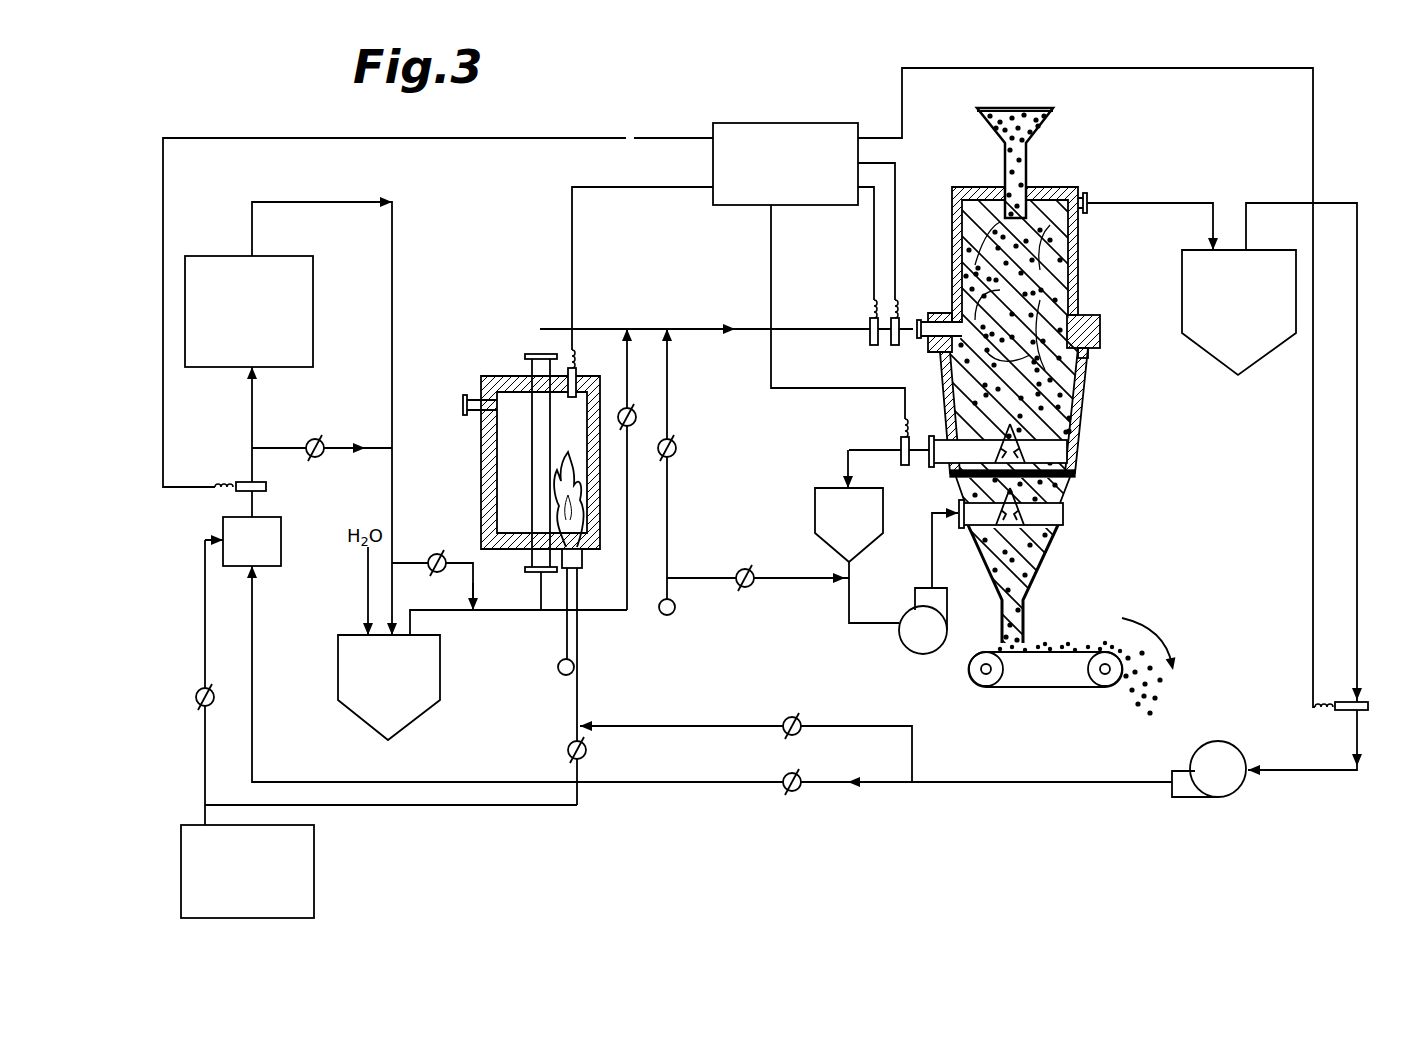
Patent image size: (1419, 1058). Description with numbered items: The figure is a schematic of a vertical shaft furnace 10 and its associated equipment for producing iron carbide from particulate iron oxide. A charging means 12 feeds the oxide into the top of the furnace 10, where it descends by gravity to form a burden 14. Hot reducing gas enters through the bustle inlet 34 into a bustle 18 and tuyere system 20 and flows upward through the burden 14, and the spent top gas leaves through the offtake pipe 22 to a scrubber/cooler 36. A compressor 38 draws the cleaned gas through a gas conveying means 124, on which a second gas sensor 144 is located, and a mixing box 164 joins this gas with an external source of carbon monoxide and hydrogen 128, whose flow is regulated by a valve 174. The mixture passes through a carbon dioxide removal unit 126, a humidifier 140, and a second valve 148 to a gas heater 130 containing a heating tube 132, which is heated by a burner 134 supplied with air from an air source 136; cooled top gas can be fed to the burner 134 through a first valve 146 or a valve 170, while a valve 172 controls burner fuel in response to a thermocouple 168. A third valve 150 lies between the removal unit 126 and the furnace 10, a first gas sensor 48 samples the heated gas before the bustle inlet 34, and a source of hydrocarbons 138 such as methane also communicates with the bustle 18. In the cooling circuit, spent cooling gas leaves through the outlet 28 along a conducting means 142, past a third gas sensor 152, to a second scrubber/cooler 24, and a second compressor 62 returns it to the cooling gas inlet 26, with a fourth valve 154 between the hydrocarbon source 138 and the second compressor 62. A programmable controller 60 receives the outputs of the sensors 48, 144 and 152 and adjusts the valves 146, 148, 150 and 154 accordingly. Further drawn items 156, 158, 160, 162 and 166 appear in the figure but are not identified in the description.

The vertical shaft furnace 10 is at (950, 233).
The means for charging particulate iron oxide material 12 is at (1018, 113).
The burden 14 is at (986, 290).
The bustle 18 is at (1100, 318).
The tuyere system 20 is at (1087, 350).
The spent top gas offtake pipe 22 is at (1087, 195).
The second scrubber/cooler 24 is at (849, 525).
The cooling gas inlet 26 is at (959, 531).
The spent cooling gas outlet 28 is at (927, 467).
The bustle inlet 34 is at (923, 317).
The scrubber/cooler 36 is at (1239, 312).
The compressor 38 is at (1209, 769).
The first gas sensor 48 is at (888, 346).
The programmable controller 60 is at (785, 164).
The second compressor 62 is at (923, 621).
The means for conveying gas 124 is at (1360, 525).
The CO2 removal unit 126 is at (249, 311).
The external source of carbon monoxide and hydrogen 128 is at (314, 868).
The gas heater 130 is at (483, 378).
The heating tube 132 is at (530, 353).
The burner 134 is at (583, 562).
The source of air 136 is at (573, 672).
The source of hydrocarbons 138 is at (674, 612).
The humidifier 140 is at (389, 687).
The means for conducting spent cooling gas 142 is at (846, 474).
The second gas sensor 144 is at (1365, 698).
The first valve 146 is at (786, 720).
The second valve 148 is at (321, 436).
The third valve 150 is at (637, 413).
The third gas sensor 152 is at (901, 438).
The fourth valve 154 is at (741, 571).
The valve 156 is at (676, 446).
The control valve 158 is at (871, 324).
The line to humidifier 160 is at (478, 582).
The valve 162 is at (435, 552).
The mixing box 164 is at (252, 541).
The control valve 166 is at (268, 489).
The thermocouple 168 is at (583, 358).
The valve 170 is at (786, 775).
The valve 172 is at (570, 745).
The valve 174 is at (198, 686).